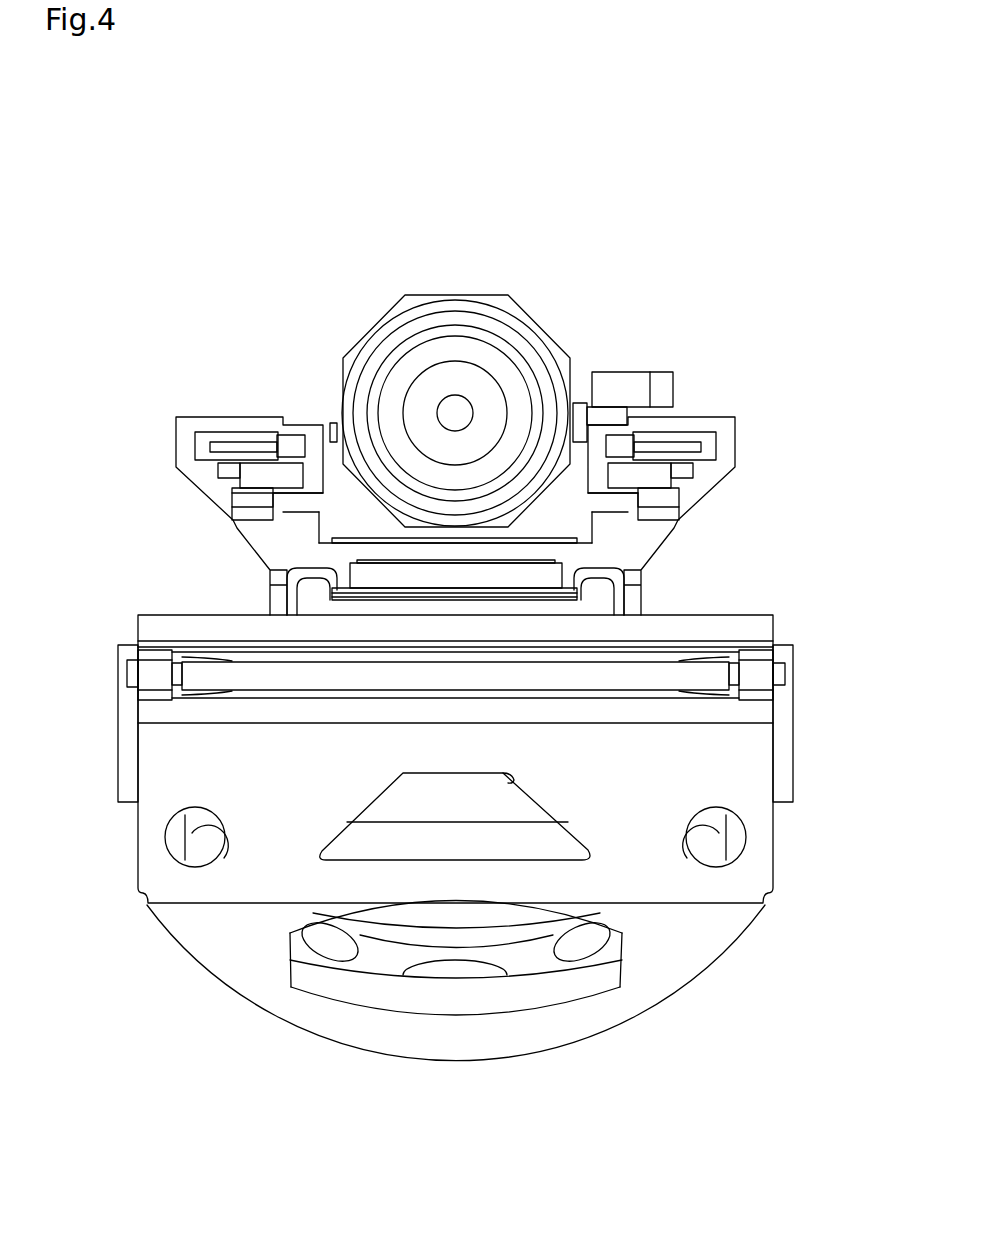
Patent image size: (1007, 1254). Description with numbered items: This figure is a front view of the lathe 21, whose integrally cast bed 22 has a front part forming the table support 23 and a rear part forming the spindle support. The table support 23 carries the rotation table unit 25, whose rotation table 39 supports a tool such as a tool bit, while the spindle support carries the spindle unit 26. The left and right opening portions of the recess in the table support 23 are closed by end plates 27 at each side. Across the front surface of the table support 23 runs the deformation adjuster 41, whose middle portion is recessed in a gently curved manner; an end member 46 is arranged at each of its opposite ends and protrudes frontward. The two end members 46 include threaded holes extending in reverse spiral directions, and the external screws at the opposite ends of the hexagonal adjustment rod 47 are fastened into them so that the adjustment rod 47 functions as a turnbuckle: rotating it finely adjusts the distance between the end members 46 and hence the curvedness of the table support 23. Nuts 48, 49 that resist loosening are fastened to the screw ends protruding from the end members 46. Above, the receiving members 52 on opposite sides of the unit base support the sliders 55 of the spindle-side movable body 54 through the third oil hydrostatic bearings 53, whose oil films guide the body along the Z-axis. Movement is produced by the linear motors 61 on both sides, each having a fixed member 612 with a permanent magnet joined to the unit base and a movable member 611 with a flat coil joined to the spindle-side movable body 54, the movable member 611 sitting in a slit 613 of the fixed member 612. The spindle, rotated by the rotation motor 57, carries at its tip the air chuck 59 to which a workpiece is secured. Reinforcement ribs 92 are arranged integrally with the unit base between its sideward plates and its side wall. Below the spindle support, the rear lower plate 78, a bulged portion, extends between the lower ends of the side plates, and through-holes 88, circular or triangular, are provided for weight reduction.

The lathe 21 is at (602, 262).
The bed 22 is at (776, 833).
The table support 23 is at (778, 722).
The rotation table unit 25 is at (375, 558).
The spindle unit 26 is at (440, 292).
The end plate 27 is at (120, 720).
The rotation table 39 is at (540, 545).
The deformation adjuster 41 is at (680, 640).
The end member 46 is at (155, 655).
The adjustment rod 47 is at (388, 680).
The nut 48 is at (780, 680).
The nut 49 is at (132, 680).
The receiving member 52 is at (176, 446).
The third oil hydrostatic bearing 53 is at (270, 522).
The spindle-side movable body 54 is at (412, 292).
The slider 55 is at (285, 500).
The rotation motor 57 is at (290, 510).
The air chuck 59 is at (485, 390).
The linear motor 61 is at (200, 442).
The movable member 611 is at (272, 428).
The fixed member 612 is at (195, 433).
The slit 613 is at (250, 447).
The rear lower plate 78 is at (650, 985).
The through-hole 88 is at (195, 810).
The reinforcement rib 92 is at (240, 540).